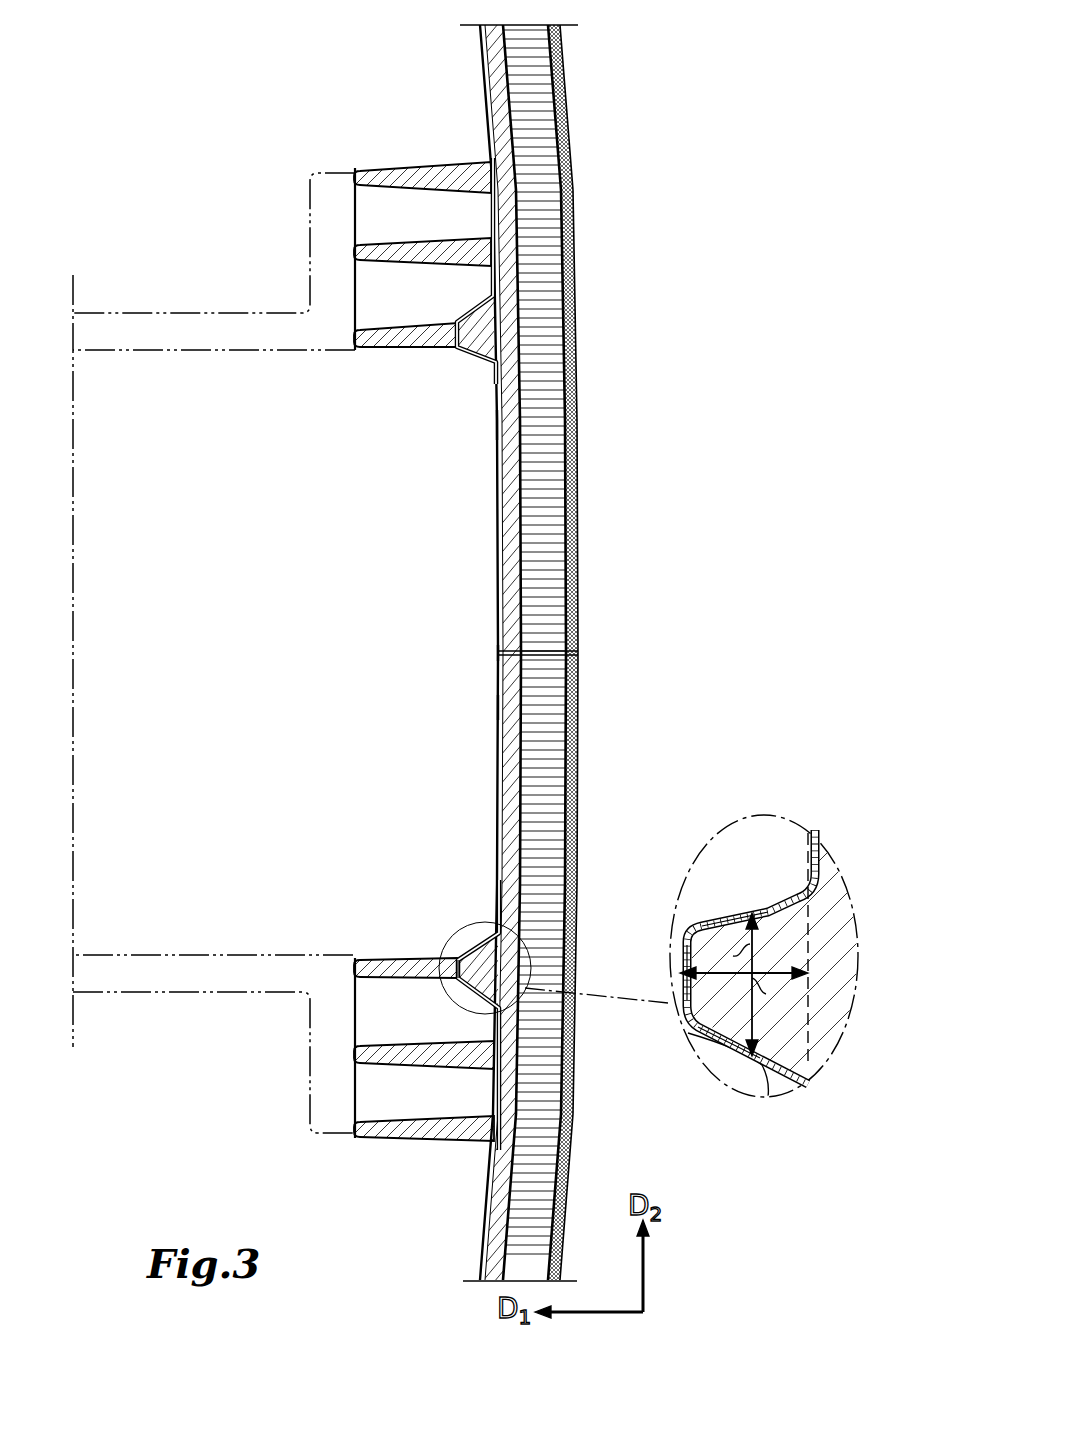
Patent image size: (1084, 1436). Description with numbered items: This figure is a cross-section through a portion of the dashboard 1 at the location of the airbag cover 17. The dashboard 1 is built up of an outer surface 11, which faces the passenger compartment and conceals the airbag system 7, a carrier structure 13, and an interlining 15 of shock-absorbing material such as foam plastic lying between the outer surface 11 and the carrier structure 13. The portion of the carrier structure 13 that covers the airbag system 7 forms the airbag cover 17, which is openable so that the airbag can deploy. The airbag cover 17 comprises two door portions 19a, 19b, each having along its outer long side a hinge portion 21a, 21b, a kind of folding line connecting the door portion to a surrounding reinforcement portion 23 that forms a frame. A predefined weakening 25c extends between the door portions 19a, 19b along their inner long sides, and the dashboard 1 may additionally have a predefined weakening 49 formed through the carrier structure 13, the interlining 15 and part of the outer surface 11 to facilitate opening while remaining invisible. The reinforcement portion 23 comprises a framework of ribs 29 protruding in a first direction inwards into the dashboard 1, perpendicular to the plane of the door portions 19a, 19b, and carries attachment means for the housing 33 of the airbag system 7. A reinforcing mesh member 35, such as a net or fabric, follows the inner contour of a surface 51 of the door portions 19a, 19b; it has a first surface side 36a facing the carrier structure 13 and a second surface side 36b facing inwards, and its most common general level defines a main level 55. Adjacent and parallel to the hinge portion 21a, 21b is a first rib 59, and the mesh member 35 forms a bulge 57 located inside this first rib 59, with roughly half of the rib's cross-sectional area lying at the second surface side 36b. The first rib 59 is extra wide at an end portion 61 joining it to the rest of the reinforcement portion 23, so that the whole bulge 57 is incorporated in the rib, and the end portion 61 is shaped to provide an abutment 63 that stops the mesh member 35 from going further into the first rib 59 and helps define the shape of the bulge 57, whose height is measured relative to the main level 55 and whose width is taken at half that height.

The dashboard 1 is at (655, 98).
The airbag system 7 is at (198, 628).
The outer surface 11 is at (572, 428).
The carrier structure 13 is at (512, 508).
The interlining 15 is at (552, 543).
The airbag cover 17 is at (447, 709).
The door portion 19a is at (462, 530).
The door portion 19b is at (458, 822).
The hinge portion 21a is at (490, 362).
The hinge portion 21b is at (490, 942).
The reinforcement portion 23 is at (414, 657).
The predefined weakening 25c is at (497, 655).
The ribs 29 is at (420, 180).
The housing 33 is at (200, 296).
The mesh member 35 is at (485, 425).
The first surface side 36a is at (500, 768).
The second surface side 36b is at (497, 745).
The predefined weakening 49 is at (578, 652).
The surface 51 is at (497, 580).
The main level 55 is at (500, 322).
The bulge 57 is at (452, 969).
The first rib 59 is at (378, 957).
The end portion 61 is at (486, 982).
The abutment 63 is at (689, 1013).